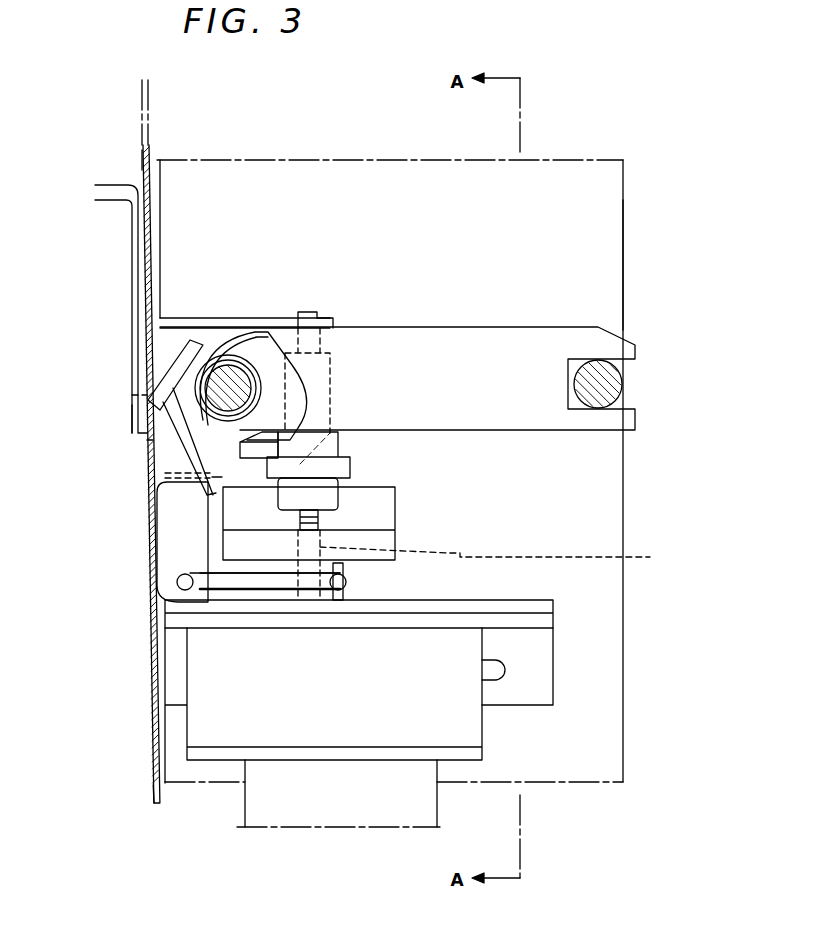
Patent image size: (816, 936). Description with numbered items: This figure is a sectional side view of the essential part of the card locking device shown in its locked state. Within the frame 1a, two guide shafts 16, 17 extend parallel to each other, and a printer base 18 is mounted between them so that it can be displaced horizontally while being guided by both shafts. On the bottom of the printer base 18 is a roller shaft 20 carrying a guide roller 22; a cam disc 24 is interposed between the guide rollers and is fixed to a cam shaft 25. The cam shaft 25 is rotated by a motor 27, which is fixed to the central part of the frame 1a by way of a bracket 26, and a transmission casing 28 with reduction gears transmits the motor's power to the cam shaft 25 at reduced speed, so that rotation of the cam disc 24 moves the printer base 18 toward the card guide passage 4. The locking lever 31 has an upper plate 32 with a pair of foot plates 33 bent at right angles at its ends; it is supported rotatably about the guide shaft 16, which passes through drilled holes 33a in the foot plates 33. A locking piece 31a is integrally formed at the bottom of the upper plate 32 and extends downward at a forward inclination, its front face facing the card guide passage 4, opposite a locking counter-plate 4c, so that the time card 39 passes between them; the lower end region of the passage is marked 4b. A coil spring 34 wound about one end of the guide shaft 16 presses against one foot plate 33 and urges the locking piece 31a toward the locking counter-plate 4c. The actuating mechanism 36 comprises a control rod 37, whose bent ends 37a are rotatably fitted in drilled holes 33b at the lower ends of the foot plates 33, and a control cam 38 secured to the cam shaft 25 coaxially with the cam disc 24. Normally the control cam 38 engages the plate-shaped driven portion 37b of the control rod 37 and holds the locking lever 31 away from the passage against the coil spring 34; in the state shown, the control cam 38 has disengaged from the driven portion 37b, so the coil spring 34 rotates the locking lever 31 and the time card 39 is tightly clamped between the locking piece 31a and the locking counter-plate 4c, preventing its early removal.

The frame 1a is at (349, 160).
The card guide passage 4 is at (155, 190).
The plate lower end 4b is at (155, 805).
The locking counter-plate 4c is at (132, 233).
The guide shaft 16 is at (220, 385).
The guide shaft 17 is at (608, 374).
The printer base 18 is at (566, 327).
The roller shaft 20 is at (338, 495).
The guide roller 22 is at (350, 478).
The cam disc 24 is at (318, 520).
The cam shaft 25 is at (500, 557).
The bracket 26 is at (553, 688).
The motor 27 is at (247, 798).
The transmission casing 28 is at (475, 720).
The locking lever 31 is at (157, 463).
The locking piece 31a is at (132, 400).
The upper plate 32 is at (173, 364).
The foot plate 33 is at (170, 500).
The drilled hole 33a is at (197, 415).
The drilled hole 33b is at (178, 582).
The coil spring 34 is at (215, 340).
The actuating mechanism 36 is at (398, 585).
The control rod 37 is at (237, 585).
The bent end 37a is at (185, 595).
The driven portion 37b is at (337, 600).
The control cam 38 is at (280, 597).
The time card 39 is at (142, 160).